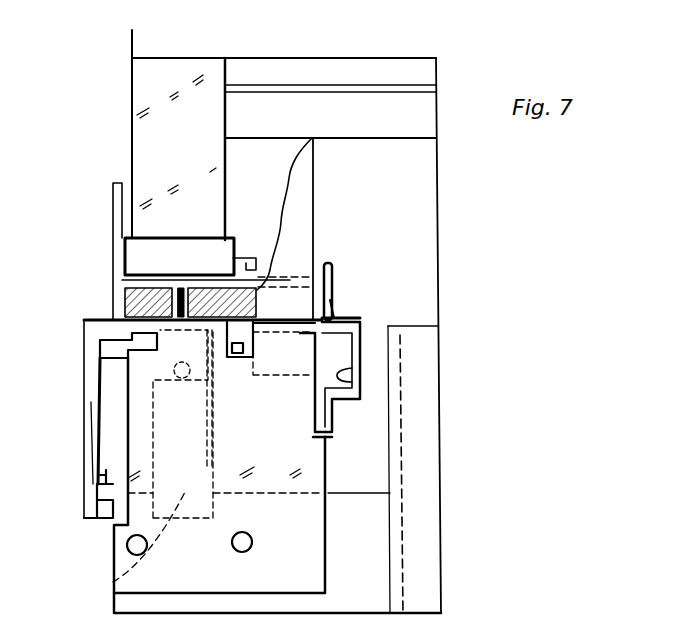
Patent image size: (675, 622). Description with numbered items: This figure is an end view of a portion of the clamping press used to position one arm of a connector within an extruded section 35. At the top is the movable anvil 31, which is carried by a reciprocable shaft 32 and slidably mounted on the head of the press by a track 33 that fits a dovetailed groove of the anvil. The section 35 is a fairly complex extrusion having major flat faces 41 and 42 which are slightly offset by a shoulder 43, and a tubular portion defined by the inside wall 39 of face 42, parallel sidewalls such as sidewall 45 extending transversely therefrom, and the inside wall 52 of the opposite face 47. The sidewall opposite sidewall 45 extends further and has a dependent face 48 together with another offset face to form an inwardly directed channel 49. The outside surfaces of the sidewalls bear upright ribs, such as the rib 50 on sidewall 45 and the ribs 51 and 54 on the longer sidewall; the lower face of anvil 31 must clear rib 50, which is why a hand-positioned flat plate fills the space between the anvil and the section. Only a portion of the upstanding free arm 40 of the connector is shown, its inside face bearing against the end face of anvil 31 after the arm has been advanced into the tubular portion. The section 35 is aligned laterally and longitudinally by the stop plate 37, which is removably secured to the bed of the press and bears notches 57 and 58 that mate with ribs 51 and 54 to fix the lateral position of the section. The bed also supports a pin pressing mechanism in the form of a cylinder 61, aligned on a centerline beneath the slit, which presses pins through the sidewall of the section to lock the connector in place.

The movable anvil 31 is at (184, 150).
The reciprocable shaft 32 is at (352, 123).
The track 33 is at (332, 81).
The section 35 is at (97, 488).
The stop plate 37 is at (212, 571).
The inside wall 39 is at (125, 295).
The free arm 40 is at (307, 197).
The major flat face 41 is at (90, 400).
The major flat face 42 is at (114, 228).
The shoulder 43 is at (92, 327).
The sidewall 45 is at (333, 277).
The opposite face 47 is at (332, 306).
The dependent face 48 is at (362, 337).
The inwardly directed channel 49 is at (345, 372).
The upright rib 50 is at (252, 256).
The rib 51 is at (100, 352).
The inside wall 52 is at (326, 310).
The rib 54 is at (240, 355).
The notch 57 is at (142, 360).
The notch 58 is at (248, 358).
The cylinder 61 is at (113, 580).